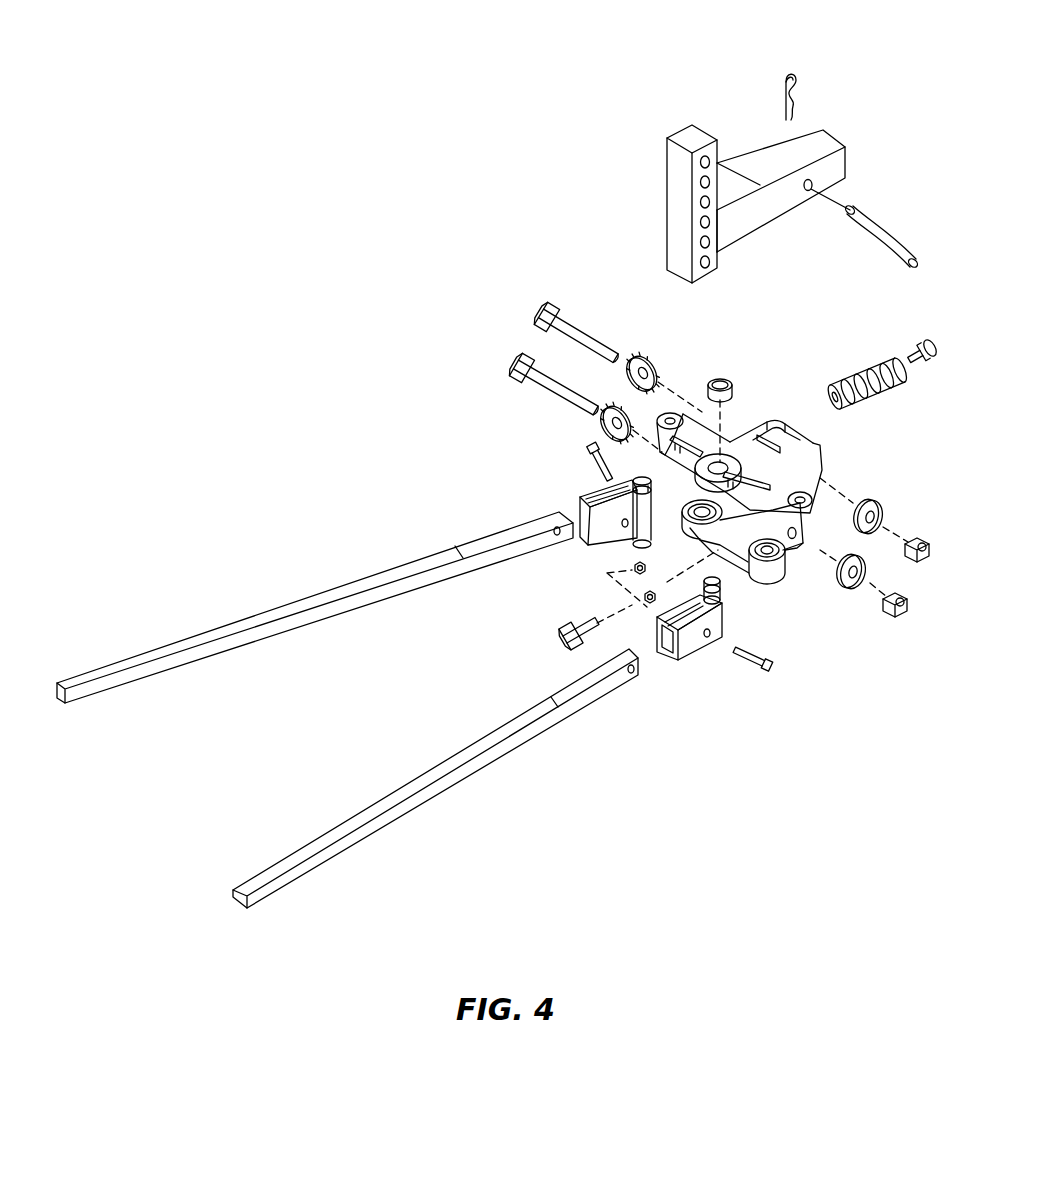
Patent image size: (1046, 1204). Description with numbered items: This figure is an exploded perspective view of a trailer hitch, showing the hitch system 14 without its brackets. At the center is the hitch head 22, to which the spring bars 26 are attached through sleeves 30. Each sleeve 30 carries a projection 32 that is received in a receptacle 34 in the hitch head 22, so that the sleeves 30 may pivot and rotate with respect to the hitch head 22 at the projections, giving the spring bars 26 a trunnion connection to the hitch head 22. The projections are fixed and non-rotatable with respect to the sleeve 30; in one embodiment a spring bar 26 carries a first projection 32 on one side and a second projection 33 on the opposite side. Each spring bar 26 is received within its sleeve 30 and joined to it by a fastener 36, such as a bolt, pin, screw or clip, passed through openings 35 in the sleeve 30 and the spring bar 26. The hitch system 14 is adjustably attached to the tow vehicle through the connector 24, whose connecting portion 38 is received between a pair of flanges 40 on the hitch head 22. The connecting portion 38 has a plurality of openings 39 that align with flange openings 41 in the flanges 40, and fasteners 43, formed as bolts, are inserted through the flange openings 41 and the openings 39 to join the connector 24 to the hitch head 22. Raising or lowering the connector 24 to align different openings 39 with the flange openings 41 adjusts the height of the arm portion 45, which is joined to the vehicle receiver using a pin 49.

The hitch system 14 is at (403, 322).
The hitch head 22 is at (820, 477).
The connector 24 is at (803, 138).
The spring bars 26 is at (281, 612).
The sleeves 30 is at (687, 652).
The projection 32 is at (720, 593).
The second projection 33 is at (722, 640).
The receptacles 34 is at (762, 572).
The openings 35 is at (705, 637).
The fastener 36 is at (590, 467).
The connecting portion 38 is at (675, 183).
The connecting portion openings 39 is at (705, 265).
The flanges 40 is at (763, 423).
The flange openings 41 is at (780, 420).
The fasteners 43 is at (538, 307).
The arm portion 45 is at (837, 165).
The pin 49 is at (893, 232).